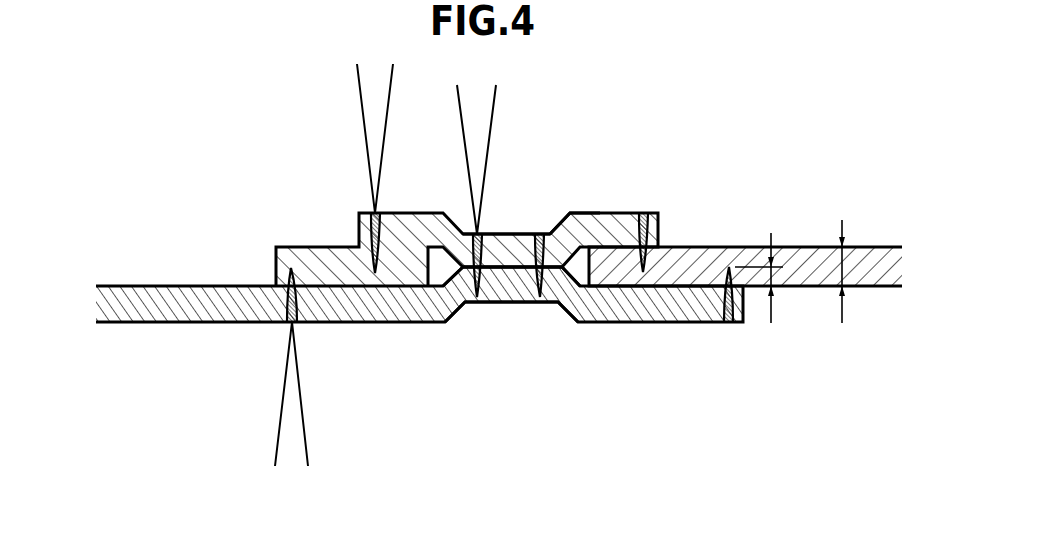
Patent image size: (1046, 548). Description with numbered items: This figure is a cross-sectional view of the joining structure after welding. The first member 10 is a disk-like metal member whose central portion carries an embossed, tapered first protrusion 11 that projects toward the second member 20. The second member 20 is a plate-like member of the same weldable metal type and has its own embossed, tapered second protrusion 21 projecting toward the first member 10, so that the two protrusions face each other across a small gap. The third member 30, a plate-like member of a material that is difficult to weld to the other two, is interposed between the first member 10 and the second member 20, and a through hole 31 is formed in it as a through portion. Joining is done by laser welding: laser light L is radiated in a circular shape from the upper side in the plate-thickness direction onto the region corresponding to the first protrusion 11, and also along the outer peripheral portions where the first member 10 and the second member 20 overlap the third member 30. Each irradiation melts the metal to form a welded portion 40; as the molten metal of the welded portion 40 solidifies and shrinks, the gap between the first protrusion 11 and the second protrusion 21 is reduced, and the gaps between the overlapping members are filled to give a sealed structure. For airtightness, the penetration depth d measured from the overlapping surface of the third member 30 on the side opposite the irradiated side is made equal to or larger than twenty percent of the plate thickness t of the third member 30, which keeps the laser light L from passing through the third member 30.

The first member 10 is at (620, 213).
The first protrusion 11 is at (497, 257).
The second member 20 is at (186, 286).
The second protrusion 21 is at (518, 273).
The third member 30 is at (707, 247).
The through hole 31 is at (577, 214).
The welded portion 40 is at (360, 228).
The laser light L is at (358, 101).
The penetration depth d is at (765, 278).
The plate thickness t is at (852, 272).